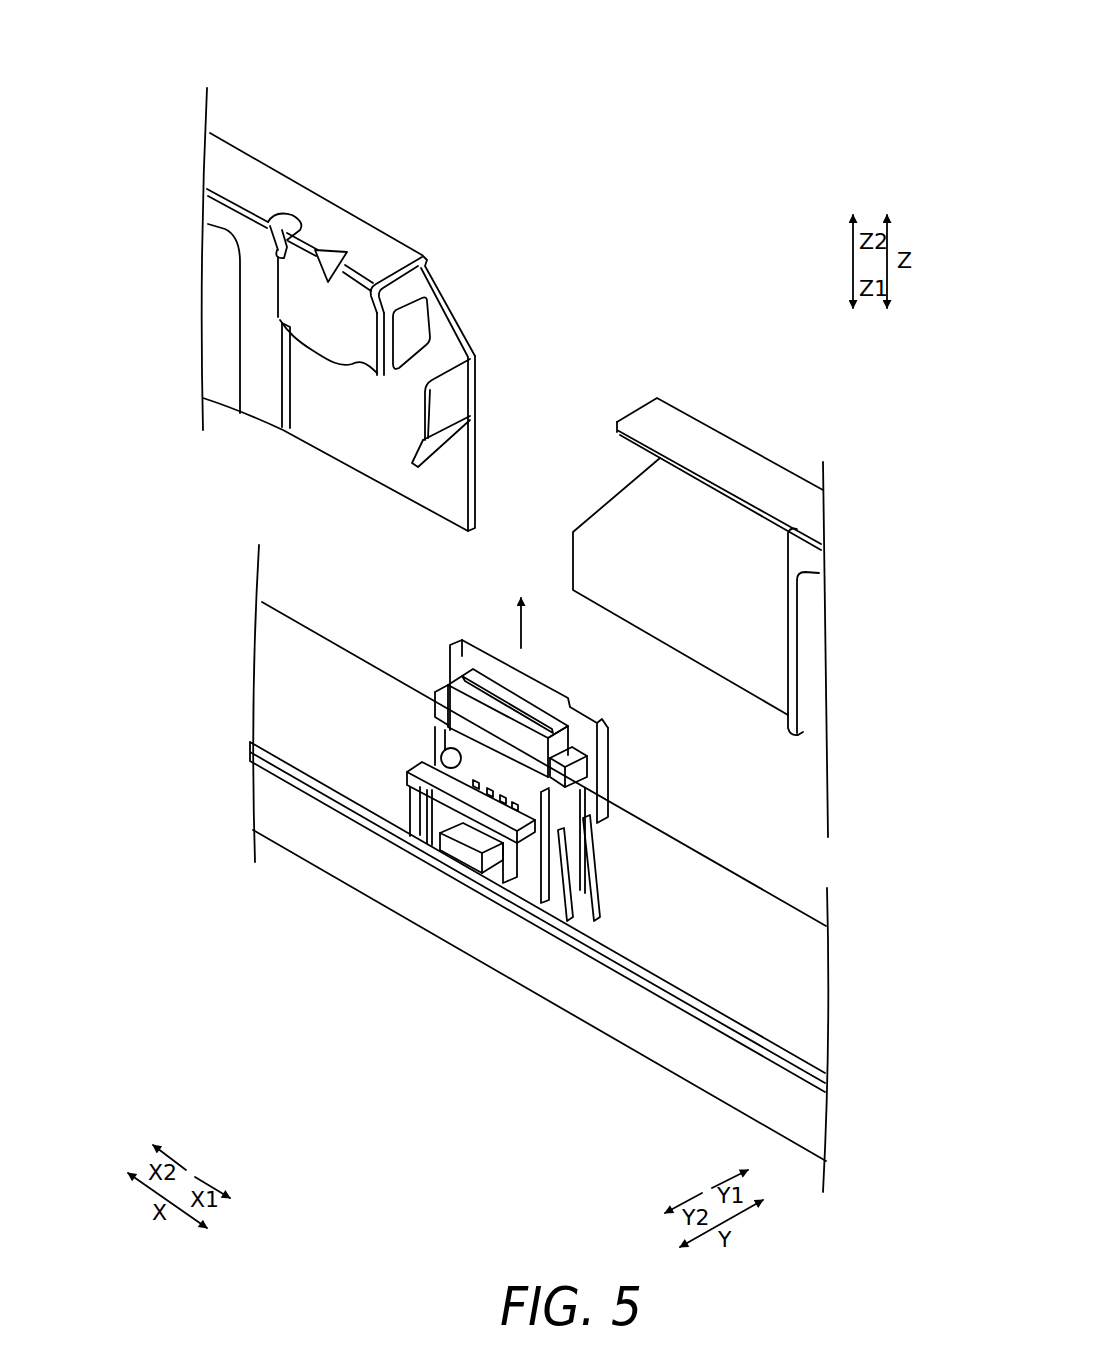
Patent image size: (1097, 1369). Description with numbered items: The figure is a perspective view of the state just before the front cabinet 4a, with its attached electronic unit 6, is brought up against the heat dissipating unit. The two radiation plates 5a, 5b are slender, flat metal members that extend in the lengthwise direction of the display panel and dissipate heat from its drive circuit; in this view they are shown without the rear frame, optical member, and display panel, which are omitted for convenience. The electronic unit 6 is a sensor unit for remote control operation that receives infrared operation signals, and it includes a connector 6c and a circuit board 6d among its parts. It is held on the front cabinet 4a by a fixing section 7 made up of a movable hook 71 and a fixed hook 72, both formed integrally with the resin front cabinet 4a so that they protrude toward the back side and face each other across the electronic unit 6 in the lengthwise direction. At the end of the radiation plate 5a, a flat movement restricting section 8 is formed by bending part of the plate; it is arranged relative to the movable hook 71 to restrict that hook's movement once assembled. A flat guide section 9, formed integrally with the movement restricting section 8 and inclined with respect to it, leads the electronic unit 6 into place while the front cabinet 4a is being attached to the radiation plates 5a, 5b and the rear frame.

The radiation plate 5a is at (452, 258).
The radiation plate 5b is at (688, 394).
The movement restricting section 8 is at (462, 402).
The guide section 9 is at (440, 448).
The front cabinet 4a is at (760, 860).
The electronic unit 6 is at (553, 670).
The connector 6c is at (558, 744).
The circuit board 6d is at (605, 776).
The fixing section 7 is at (413, 656).
The movable hook 71 is at (428, 744).
The fixed hook 72 is at (598, 862).